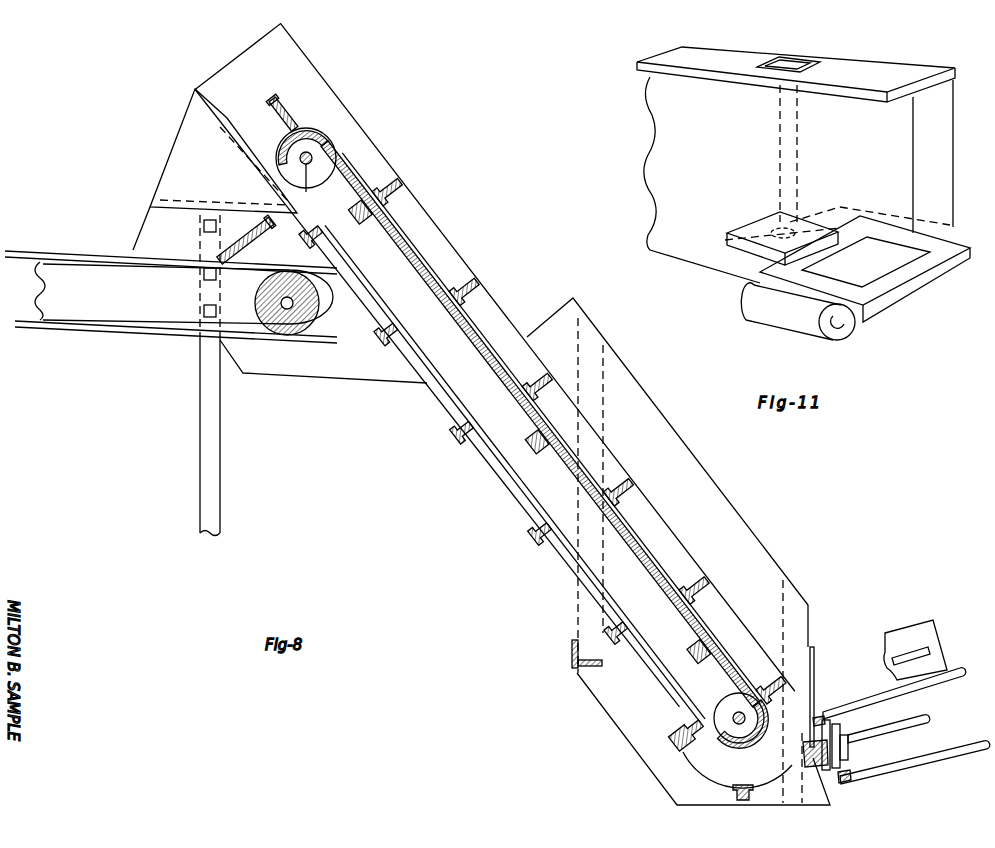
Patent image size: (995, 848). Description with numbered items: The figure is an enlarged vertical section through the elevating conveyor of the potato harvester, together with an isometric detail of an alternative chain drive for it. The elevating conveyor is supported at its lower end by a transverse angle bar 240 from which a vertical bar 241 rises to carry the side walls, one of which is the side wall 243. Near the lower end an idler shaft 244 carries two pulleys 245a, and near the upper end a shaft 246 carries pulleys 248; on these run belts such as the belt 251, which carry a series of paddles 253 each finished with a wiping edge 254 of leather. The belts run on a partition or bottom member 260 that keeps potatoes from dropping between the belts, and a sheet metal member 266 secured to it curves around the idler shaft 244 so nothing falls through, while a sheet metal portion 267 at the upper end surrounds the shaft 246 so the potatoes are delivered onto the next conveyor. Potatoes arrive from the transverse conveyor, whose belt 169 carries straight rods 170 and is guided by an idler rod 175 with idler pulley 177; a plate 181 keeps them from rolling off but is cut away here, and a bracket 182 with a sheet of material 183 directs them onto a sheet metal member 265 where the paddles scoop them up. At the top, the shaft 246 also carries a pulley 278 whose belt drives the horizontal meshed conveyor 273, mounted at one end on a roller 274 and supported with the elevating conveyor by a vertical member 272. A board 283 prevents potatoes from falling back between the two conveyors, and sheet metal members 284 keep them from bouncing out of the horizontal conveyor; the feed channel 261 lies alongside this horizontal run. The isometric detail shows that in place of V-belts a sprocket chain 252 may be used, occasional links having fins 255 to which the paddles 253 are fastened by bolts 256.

In FIG. 8, the pulley 278 is at (448, 245).
In FIG. 8, the wiping edge 254 is at (400, 183).
In FIG. 11, the wiping edge 254 is at (915, 70).
In FIG. 8, the paddle 253 is at (402, 188).
In FIG. 11, the paddle 253 is at (650, 121).
In FIG. 8, the partition or bottom member 260 is at (660, 590).
In FIG. 8, the belt 251 is at (648, 542).
In FIG. 8, the sheet metal portion 267 is at (307, 130).
In FIG. 8, the pulley 248 is at (279, 147).
In FIG. 8, the shaft 246 is at (308, 191).
In FIG. 8, the idler shaft 244 is at (733, 712).
In FIG. 8, the pulley 245a is at (750, 728).
In FIG. 8, the sheet metal member 266 is at (764, 745).
In FIG. 8, the sheet metal member 265 is at (712, 781).
In FIG. 8, the board 283 is at (262, 236).
In FIG. 8, the sheet metal member 284 is at (197, 158).
In FIG. 8, the feed channel 261 is at (171, 287).
In FIG. 8, the horizontal meshed conveyor 273 is at (131, 333).
In FIG. 8, the roller 274 is at (297, 336).
In FIG. 8, the vertical member 272 is at (201, 453).
In FIG. 8, the side wall 243 is at (731, 507).
In FIG. 8, the vertical bar 241 is at (578, 611).
In FIG. 8, the transverse angle bar 240 is at (572, 652).
In FIG. 8, the plate 181 is at (815, 687).
In FIG. 8, the belt 169 is at (817, 728).
In FIG. 8, the idler pulley 177 is at (841, 733).
In FIG. 8, the rod 175 is at (928, 720).
In FIG. 8, the rod 170 is at (945, 680).
In FIG. 8, the sheet of material 183 is at (940, 643).
In FIG. 8, the bracket 182 is at (886, 664).
In FIG. 11, the bolt 256 is at (808, 63).
In FIG. 11, the fin 255 is at (726, 245).
In FIG. 11, the sprocket chain 252 is at (920, 283).